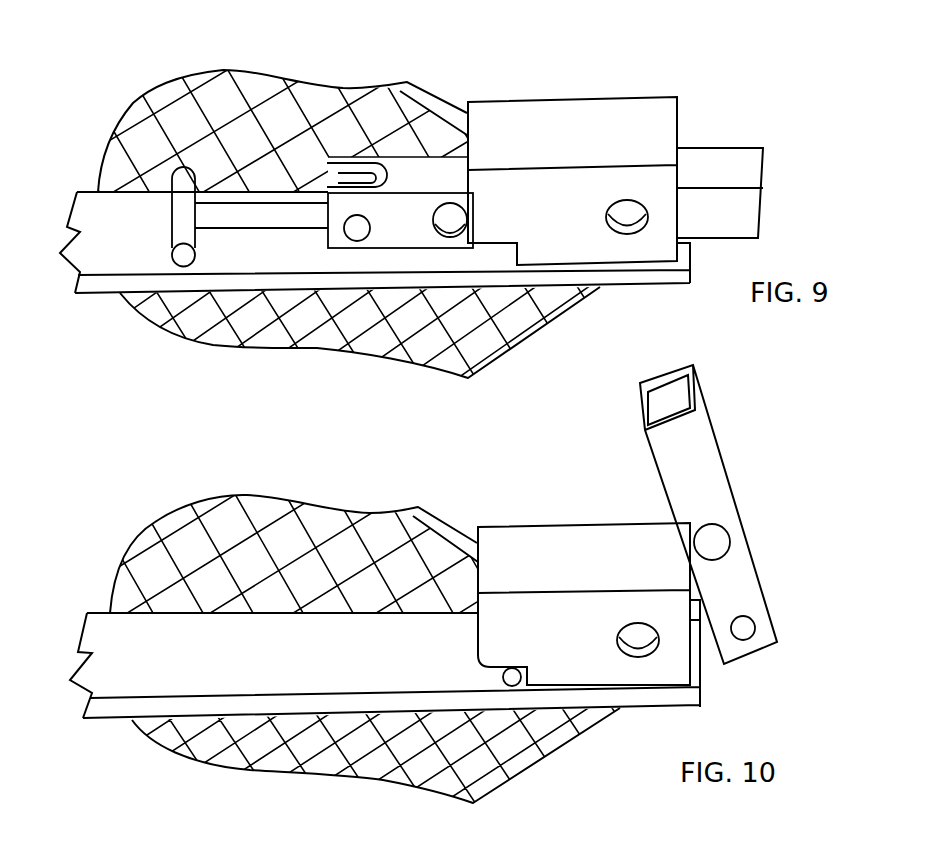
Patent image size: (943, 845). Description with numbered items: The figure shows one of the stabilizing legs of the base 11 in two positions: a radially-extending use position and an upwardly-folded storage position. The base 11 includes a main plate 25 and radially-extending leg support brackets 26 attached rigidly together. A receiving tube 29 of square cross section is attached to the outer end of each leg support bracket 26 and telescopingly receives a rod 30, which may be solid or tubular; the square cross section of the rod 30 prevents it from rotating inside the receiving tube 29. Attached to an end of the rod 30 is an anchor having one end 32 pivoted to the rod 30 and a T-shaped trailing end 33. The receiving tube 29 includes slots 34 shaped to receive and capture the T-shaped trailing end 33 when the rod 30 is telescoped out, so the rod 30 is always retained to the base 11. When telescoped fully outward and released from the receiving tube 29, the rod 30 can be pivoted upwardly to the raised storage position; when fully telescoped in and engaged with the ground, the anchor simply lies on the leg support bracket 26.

In FIG. 9, the base 11 is at (402, 60).
In FIG. 10, the base 11 is at (456, 488).
In FIG. 9, the main plate 25 is at (175, 100).
In FIG. 10, the main plate 25 is at (182, 527).
In FIG. 9, the leg support bracket 26 is at (88, 192).
In FIG. 10, the leg support bracket 26 is at (98, 613).
In FIG. 9, the receiving tube 29 is at (572, 107).
In FIG. 10, the receiving tube 29 is at (583, 533).
In FIG. 9, the rod 30 is at (717, 157).
In FIG. 10, the rod 30 is at (652, 460).
In FIG. 9, the pivoted end of anchor 32 is at (359, 240).
In FIG. 9, the T-shaped trailing end 33 is at (178, 210).
In FIG. 10, the T-shaped trailing end 33 is at (515, 686).
In FIG. 9, the slots 34 is at (497, 258).
In FIG. 10, the slots 34 is at (492, 686).